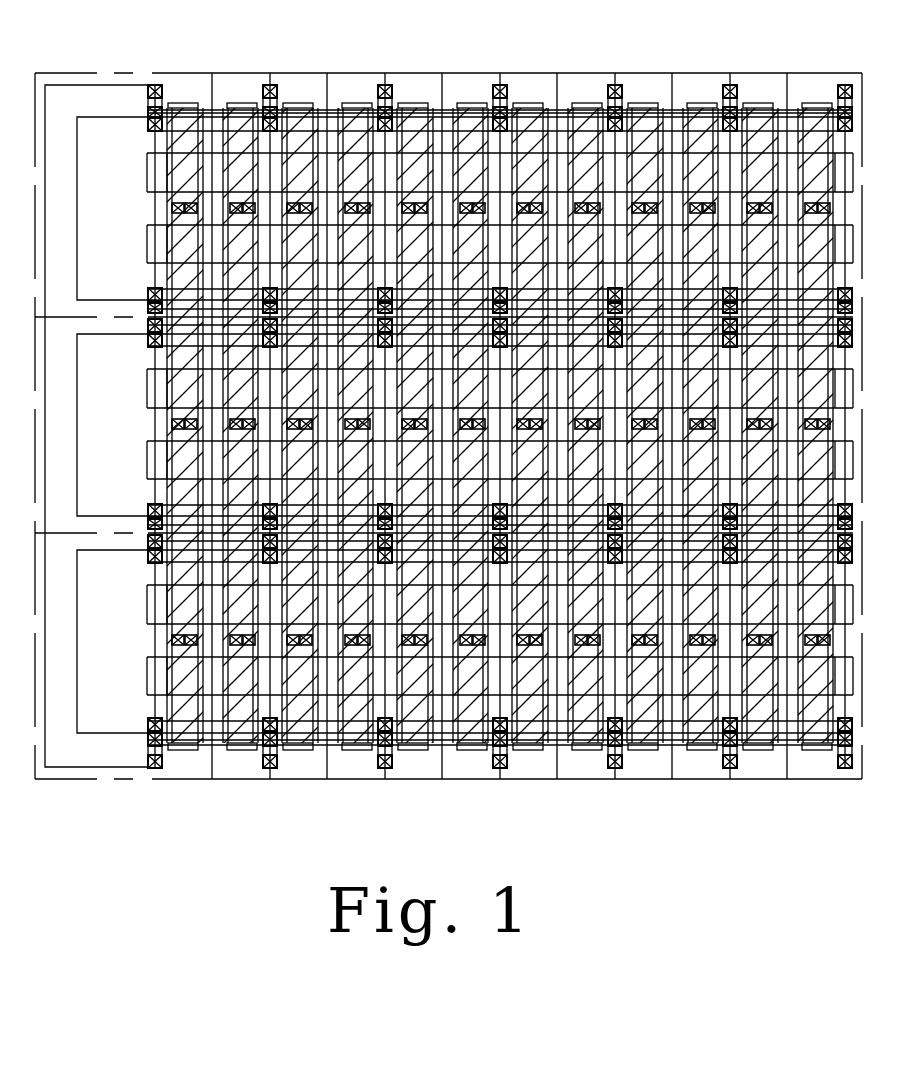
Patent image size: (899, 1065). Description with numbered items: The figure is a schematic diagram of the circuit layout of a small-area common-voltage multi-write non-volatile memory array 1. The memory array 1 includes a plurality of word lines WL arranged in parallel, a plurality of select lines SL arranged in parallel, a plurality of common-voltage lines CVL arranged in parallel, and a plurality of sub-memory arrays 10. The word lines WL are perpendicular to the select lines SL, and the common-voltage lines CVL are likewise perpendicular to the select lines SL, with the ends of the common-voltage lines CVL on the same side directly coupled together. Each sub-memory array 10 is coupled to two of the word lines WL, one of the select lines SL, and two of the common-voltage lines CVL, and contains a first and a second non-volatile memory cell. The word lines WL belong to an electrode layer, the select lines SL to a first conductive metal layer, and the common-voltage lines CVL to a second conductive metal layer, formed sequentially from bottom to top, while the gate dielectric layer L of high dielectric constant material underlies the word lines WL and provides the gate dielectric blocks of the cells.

The sub-memory array 10 is at (37, 72).
The common-voltage line CVL is at (95, 92).
The select line SL is at (184, 104).
The word line WL is at (150, 170).
The gate dielectric layer L is at (168, 208).
The small-area common-voltage multi-write non-volatile memory array 1 is at (753, 852).